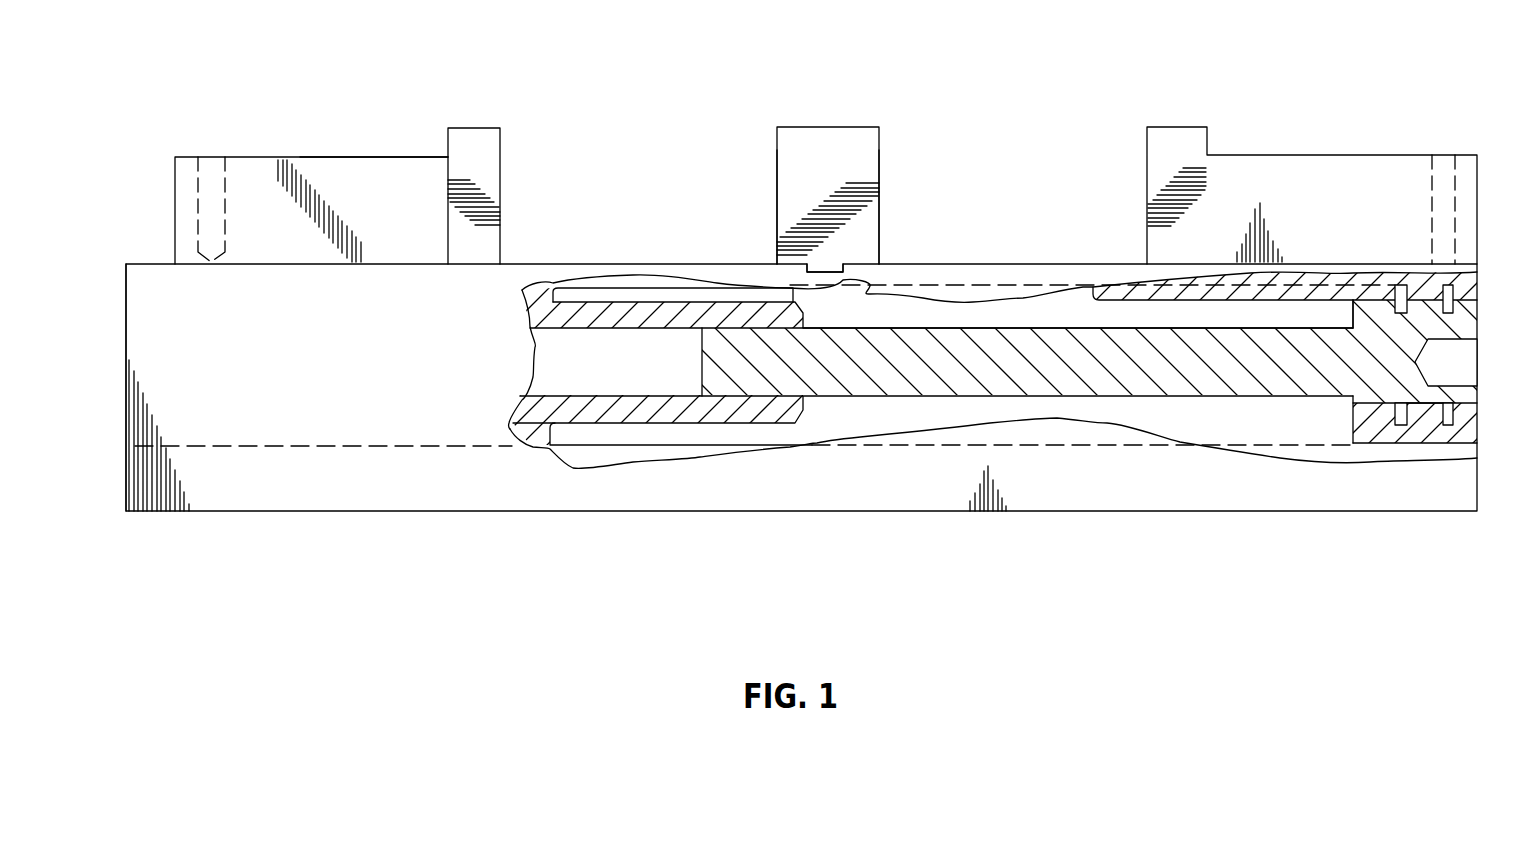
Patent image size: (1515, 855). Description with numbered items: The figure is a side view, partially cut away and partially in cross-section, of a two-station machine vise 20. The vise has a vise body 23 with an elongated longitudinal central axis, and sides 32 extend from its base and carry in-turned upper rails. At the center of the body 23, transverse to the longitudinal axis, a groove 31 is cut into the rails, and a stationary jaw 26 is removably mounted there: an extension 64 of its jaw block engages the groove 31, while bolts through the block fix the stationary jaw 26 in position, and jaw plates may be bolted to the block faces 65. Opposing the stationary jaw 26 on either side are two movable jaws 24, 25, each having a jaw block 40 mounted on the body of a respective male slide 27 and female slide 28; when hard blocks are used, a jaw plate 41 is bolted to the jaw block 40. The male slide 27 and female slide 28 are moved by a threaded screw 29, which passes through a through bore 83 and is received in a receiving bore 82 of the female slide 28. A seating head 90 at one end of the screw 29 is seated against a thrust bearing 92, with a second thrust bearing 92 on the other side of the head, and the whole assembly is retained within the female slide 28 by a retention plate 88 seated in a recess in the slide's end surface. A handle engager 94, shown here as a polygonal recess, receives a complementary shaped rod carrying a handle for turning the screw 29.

The two-station machine vise 20 is at (1002, 130).
The vise body 23 is at (367, 492).
The movable jaw 24 is at (289, 142).
The movable jaw 25 is at (1337, 142).
The stationary jaw 26 is at (845, 112).
The male slide 27 is at (616, 436).
The female slide 28 is at (1342, 427).
The threaded screw 29 is at (883, 375).
The groove 31 is at (863, 296).
The sides 32 is at (170, 308).
The jaw block 40 is at (395, 185).
The jaw plate 41 is at (484, 145).
The extension 64 is at (822, 266).
The block faces 65 is at (777, 163).
The receiving bore 82 is at (1402, 425).
The through bore 83 is at (1355, 396).
The retention plate 88 is at (1463, 420).
The seating head 90 is at (1423, 412).
The thrust bearing 92 is at (1445, 290).
The handle engager 94 is at (1440, 380).